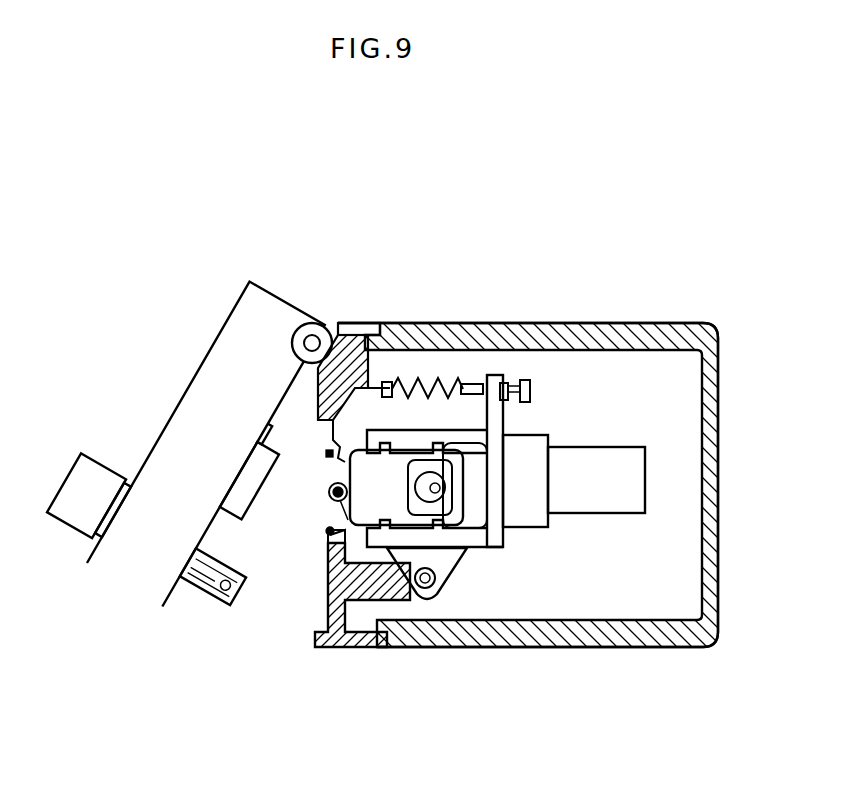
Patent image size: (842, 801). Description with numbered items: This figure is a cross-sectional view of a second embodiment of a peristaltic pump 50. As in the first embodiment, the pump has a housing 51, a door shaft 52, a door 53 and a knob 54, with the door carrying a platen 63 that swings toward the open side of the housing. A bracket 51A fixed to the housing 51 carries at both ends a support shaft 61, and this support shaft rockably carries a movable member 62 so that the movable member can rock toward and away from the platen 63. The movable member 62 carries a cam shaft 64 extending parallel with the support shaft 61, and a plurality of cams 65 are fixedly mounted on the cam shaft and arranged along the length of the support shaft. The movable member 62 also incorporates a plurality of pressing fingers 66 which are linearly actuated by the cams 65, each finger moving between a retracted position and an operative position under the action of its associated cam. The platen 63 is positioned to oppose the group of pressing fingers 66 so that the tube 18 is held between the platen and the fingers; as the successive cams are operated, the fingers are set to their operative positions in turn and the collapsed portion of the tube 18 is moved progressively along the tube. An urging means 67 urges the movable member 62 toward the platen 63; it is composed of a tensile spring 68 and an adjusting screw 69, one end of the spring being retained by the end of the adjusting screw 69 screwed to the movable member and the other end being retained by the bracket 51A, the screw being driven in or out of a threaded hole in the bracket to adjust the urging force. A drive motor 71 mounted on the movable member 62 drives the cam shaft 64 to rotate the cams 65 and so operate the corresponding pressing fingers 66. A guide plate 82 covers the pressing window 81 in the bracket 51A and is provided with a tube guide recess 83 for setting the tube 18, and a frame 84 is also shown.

The peristaltic pump 50 is at (524, 318).
The housing 51 is at (612, 322).
The bracket 51A is at (355, 322).
The door shaft 52 is at (318, 321).
The door 53 is at (195, 390).
The knob 54 is at (85, 472).
The platen 63 is at (229, 575).
The tensile spring 68 is at (405, 375).
The urging means 67 is at (455, 375).
The adjusting screw 69 is at (530, 392).
The cams 65 is at (510, 527).
The pressing window 81 is at (363, 450).
The cam shaft 64 is at (447, 481).
The movable member 62 is at (447, 555).
The drive motor 71 is at (620, 464).
The support shaft 61 is at (437, 603).
The pressing fingers 66 is at (362, 512).
The tube guide recess 83 is at (330, 484).
The tube 18 is at (325, 494).
The guide plate 82 is at (328, 528).
The frame 84 is at (330, 538).